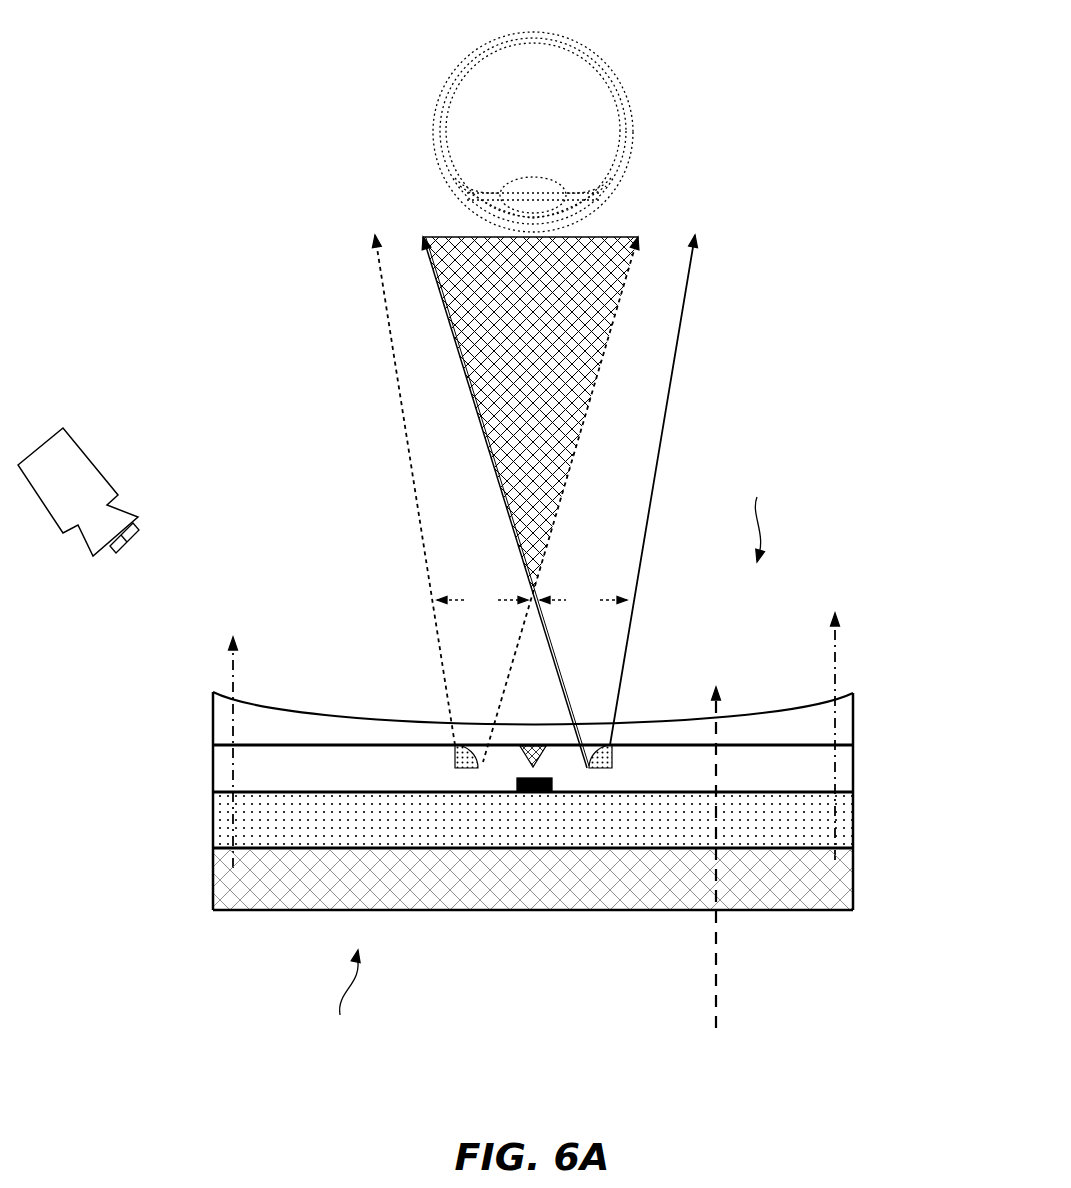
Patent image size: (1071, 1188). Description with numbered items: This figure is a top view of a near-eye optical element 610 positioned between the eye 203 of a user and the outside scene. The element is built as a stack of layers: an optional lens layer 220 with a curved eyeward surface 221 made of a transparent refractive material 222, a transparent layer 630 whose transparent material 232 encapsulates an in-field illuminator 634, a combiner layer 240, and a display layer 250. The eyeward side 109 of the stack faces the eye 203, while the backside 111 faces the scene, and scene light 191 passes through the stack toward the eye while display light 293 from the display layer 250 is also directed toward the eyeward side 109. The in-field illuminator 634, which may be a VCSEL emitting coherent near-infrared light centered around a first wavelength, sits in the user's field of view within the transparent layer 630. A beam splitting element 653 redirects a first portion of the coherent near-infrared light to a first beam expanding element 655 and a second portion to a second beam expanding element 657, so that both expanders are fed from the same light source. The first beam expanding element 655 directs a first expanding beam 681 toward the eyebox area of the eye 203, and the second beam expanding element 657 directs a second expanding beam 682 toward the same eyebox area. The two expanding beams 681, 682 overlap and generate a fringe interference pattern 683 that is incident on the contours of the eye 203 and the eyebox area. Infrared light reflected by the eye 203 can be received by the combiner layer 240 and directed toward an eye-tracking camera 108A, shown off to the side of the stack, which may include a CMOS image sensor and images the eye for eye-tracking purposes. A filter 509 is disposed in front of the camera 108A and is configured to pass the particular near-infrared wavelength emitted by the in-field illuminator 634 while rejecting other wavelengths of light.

The eye 203 is at (618, 103).
The fringe interference pattern 683 is at (530, 502).
The display light 293 is at (549, 551).
The first expanding beam 681 is at (482, 600).
The second expanding beam 682 is at (583, 600).
The eye-tracking camera 108A is at (78, 452).
The filter 509 is at (141, 527).
The near-eye optical element 610 is at (538, 777).
The lens layer 220 is at (574, 695).
The eyeward surface of the lens layer 221 is at (812, 706).
The transparent refractive material 222 is at (533, 731).
The transparent layer 630 is at (574, 768).
The transparent material 232 is at (862, 745).
The combiner layer 240 is at (862, 792).
The display layer 250 is at (862, 848).
The first beam expanding element 655 is at (454, 757).
The second beam expanding element 657 is at (613, 762).
The beam splitting element 653 is at (538, 755).
The in-field illuminator 634 is at (517, 786).
The eyeward side 109 is at (765, 488).
The backside 111 is at (345, 1026).
The scene light 191 is at (713, 887).